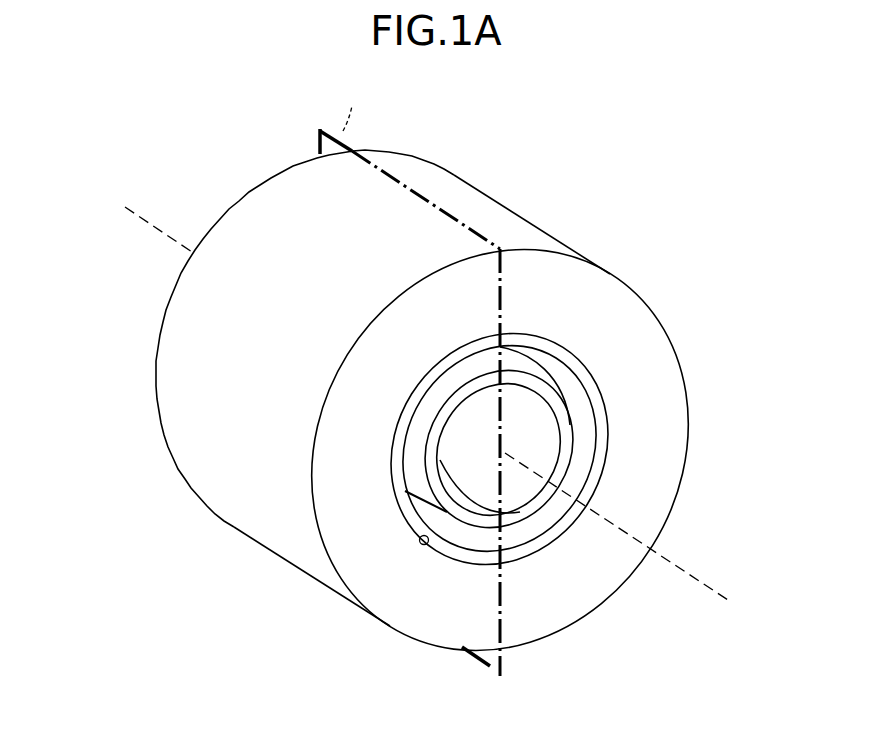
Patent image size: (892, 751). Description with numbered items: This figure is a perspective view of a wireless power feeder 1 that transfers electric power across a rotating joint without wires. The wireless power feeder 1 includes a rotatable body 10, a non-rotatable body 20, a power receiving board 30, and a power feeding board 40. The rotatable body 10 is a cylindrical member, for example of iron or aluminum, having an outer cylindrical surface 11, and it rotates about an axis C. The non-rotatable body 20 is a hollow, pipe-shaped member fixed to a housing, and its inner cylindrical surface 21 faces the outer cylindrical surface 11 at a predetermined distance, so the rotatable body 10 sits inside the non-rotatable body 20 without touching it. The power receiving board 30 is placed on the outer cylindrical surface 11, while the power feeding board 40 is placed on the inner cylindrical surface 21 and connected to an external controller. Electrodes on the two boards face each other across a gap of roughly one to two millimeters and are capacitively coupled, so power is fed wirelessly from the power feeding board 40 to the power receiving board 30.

The wireless power feeder 1 is at (136, 103).
The rotatable body 10 is at (540, 460).
The outer cylindrical surface 11 is at (481, 516).
The non-rotatable body 20 is at (555, 301).
The inner cylindrical surface 21 is at (424, 545).
The power receiving board 30 is at (568, 426).
The power feeding board 40 is at (576, 368).